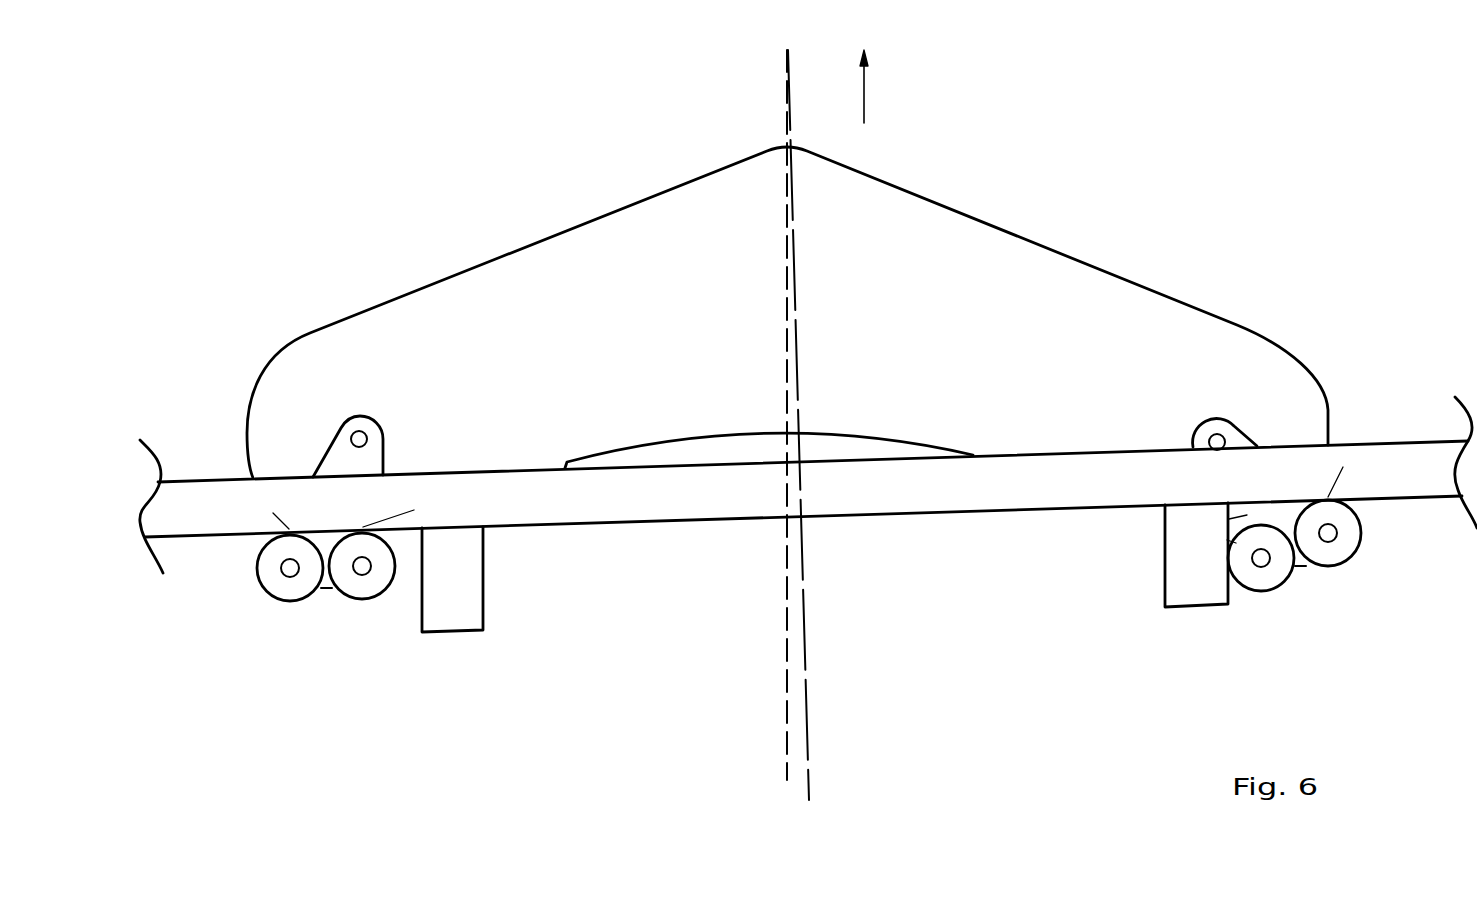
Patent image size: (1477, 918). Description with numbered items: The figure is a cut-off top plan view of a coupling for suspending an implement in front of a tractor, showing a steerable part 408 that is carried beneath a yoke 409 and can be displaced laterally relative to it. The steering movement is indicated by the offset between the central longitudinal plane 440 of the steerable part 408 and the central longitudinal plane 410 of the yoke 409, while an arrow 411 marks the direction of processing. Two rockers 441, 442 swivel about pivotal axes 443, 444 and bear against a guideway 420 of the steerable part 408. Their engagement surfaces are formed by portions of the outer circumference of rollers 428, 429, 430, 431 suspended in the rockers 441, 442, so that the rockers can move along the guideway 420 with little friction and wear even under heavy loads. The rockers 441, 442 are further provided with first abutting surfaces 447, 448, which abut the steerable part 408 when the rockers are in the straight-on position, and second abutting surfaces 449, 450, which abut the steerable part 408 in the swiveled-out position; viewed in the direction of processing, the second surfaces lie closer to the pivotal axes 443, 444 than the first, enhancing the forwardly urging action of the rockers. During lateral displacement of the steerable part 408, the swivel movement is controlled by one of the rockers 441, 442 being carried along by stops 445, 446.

The steerable part 408 is at (658, 521).
The yoke 409 is at (948, 339).
The central longitudinal plane of the yoke 410 is at (785, 623).
The arrow indicating direction of processing 411 is at (864, 95).
The guideway 420 is at (182, 538).
The roller 428 is at (360, 582).
The roller 429 is at (287, 587).
The roller 430 is at (1267, 583).
The roller 431 is at (1337, 552).
The central longitudinal plane of the steerable part 440 is at (808, 653).
The rocker 441 is at (385, 465).
The rocker 442 is at (1255, 443).
The pivotal axis of rocker 443 is at (364, 434).
The pivotal axis of rocker 444 is at (1215, 441).
The stop 445 is at (474, 605).
The stop 446 is at (1247, 515).
The first abutting surface 447 is at (414, 510).
The first abutting surface 448 is at (1227, 540).
The second abutting surface 449 is at (273, 513).
The second abutting surface 450 is at (1343, 467).